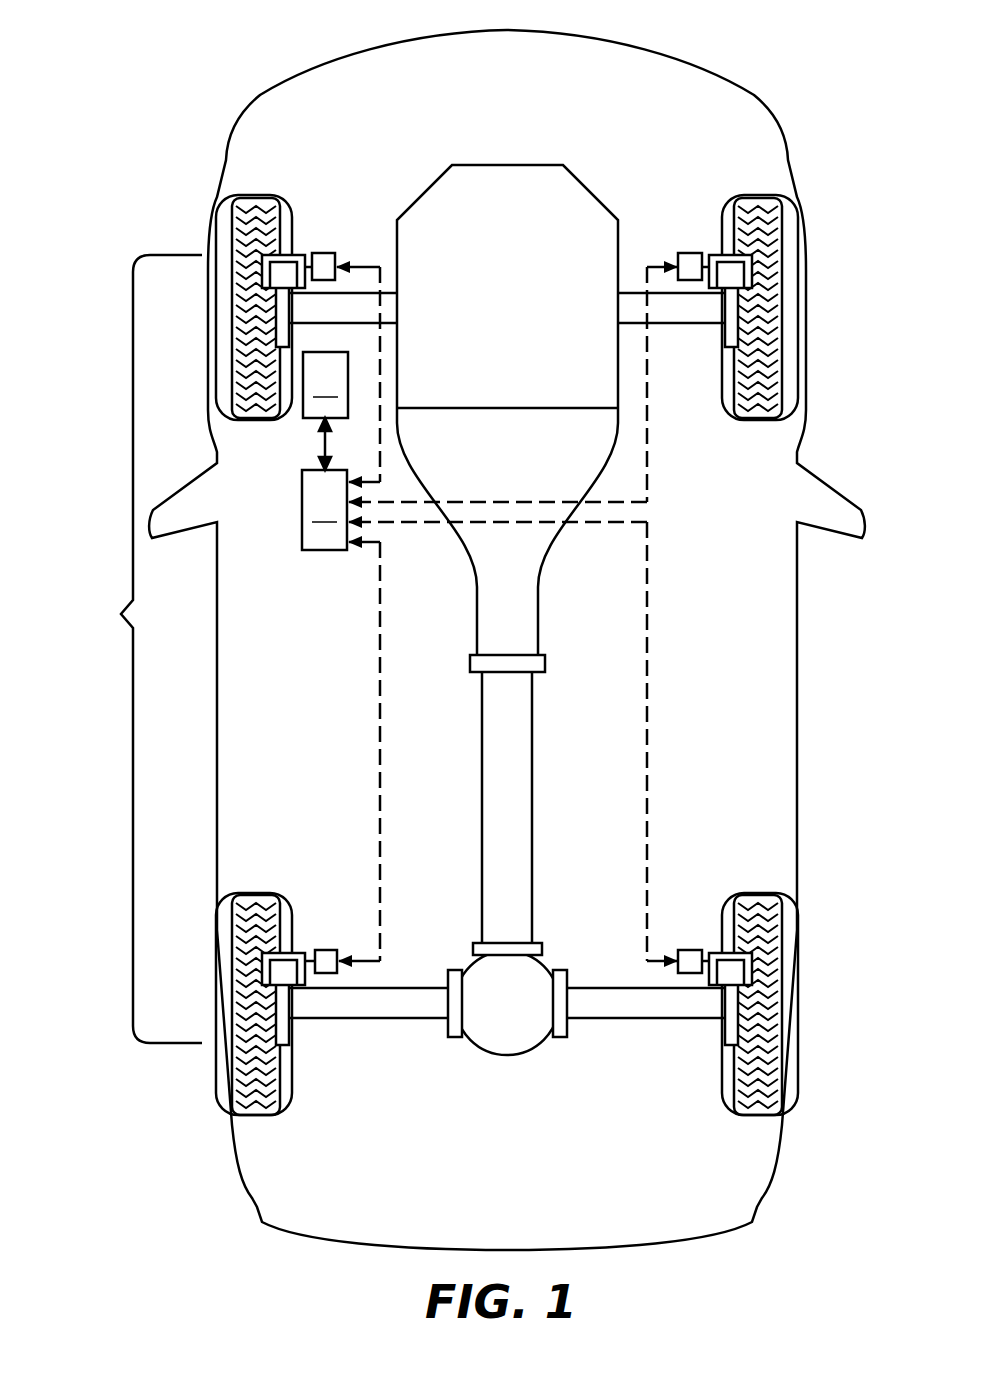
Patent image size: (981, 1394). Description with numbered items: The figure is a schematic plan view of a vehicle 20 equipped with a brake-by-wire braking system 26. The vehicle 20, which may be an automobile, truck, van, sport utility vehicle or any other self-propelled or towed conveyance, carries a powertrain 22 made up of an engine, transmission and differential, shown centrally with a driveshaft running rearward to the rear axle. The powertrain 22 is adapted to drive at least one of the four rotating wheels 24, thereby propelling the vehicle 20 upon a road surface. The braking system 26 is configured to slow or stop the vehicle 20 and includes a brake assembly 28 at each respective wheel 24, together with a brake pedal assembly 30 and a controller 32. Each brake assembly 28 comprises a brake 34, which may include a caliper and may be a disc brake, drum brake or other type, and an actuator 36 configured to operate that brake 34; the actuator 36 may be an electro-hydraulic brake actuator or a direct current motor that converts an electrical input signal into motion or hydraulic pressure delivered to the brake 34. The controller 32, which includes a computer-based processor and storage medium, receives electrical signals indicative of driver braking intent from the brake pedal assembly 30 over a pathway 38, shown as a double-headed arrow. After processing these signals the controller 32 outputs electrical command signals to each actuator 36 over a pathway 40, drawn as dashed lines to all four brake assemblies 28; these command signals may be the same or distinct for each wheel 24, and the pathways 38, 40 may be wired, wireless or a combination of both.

The vehicle 20 is at (770, 75).
The powertrain 22 is at (598, 194).
The rotating wheels 24 is at (800, 272).
The braking system 26 is at (120, 614).
The brake assembly 28 is at (509, 595).
The brake pedal assembly 30 is at (325, 385).
The controller 32 is at (324, 510).
The brake 34 is at (296, 256).
The actuator 36 is at (326, 253).
The pathway 38 is at (320, 440).
The pathway 40 is at (383, 402).